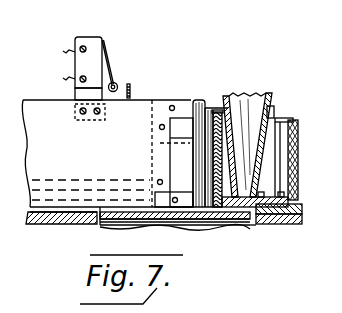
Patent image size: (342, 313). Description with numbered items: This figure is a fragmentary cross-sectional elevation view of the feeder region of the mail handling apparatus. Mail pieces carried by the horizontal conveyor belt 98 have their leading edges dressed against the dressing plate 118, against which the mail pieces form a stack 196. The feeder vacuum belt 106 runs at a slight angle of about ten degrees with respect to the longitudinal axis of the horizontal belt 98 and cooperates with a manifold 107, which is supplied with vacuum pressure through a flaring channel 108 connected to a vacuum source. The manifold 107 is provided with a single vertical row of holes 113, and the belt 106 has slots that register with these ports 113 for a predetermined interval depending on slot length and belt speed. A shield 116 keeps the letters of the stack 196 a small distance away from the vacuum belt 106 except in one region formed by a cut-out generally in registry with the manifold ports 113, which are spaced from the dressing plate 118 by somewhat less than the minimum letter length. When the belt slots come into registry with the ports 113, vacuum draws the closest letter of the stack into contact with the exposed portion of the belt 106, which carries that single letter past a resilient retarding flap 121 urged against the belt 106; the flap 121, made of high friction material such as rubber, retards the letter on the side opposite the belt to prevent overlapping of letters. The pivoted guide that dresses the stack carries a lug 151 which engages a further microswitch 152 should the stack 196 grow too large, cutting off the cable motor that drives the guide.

The microswitch 152 is at (97, 44).
The lug 151 is at (129, 83).
The dressing plate 118 is at (142, 100).
The resilient retarding flap 121 is at (181, 100).
The feeder vacuum belt 106 is at (213, 108).
The shield 116 is at (224, 104).
The flaring channel 108 is at (263, 100).
The manifold 107 is at (258, 160).
The holes 113 is at (228, 156).
The horizontal conveyor belt 98 is at (166, 218).
The stack 196 is at (212, 212).